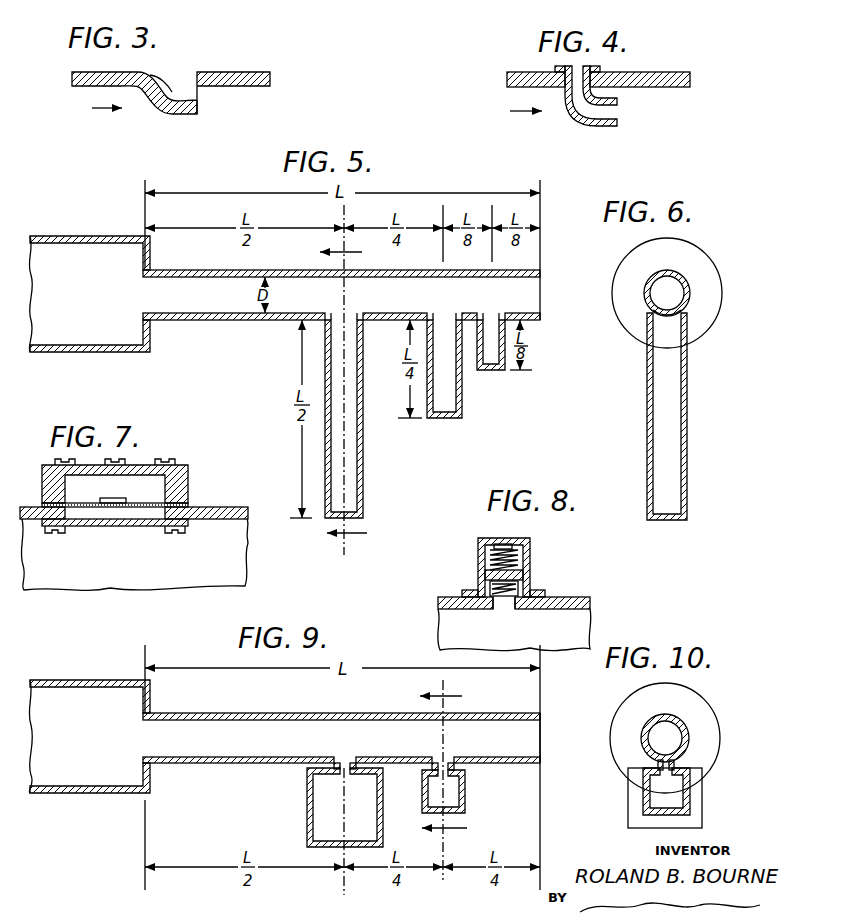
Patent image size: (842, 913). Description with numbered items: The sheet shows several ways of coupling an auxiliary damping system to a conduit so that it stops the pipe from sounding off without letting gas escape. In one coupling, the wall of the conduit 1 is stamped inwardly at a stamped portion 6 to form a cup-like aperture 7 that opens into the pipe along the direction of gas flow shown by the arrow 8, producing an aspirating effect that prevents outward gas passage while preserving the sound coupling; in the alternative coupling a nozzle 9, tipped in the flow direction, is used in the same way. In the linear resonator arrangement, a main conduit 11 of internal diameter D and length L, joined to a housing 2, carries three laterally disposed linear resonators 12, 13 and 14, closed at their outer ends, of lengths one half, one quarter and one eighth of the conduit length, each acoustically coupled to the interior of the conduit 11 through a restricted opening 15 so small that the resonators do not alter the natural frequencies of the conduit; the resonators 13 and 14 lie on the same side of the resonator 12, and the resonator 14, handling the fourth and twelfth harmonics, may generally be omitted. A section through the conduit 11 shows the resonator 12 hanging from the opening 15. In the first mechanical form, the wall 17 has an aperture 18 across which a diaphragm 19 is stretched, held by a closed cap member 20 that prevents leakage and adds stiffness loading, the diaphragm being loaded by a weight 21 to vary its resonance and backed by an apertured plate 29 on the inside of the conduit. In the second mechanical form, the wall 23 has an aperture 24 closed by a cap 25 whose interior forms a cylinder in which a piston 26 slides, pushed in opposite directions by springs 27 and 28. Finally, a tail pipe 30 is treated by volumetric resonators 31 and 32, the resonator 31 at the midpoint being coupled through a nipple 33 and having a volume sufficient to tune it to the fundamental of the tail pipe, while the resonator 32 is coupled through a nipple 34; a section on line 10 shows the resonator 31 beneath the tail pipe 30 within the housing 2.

In FIG. 3, the conduit 1 is at (80, 78).
In FIG. 4, the conduit 1 is at (657, 72).
In FIG. 5, the cylindrical housing 2 is at (68, 238).
In FIG. 6, the cylindrical housing 2 is at (714, 262).
In FIG. 9, the cylindrical housing 2 is at (84, 793).
In FIG. 10, the cylindrical housing 2 is at (717, 760).
In FIG. 3, the inwardly stamped wall portion 6 is at (178, 90).
In FIG. 5, the inwardly stamped wall portion 6 is at (351, 380).
In FIG. 3, the cup-like aperture 7 is at (200, 95).
In FIG. 3, the arrow indicating direction of gas flow 8 is at (95, 105).
In FIG. 4, the arrow indicating direction of gas flow 8 is at (518, 111).
In FIG. 4, the nozzle 9 is at (599, 127).
In FIG. 9, the section line 10 is at (457, 780).
In FIG. 5, the main conduit 11 is at (238, 318).
In FIG. 6, the main conduit 11 is at (648, 280).
In FIG. 5, the linear resonator 12 is at (363, 440).
In FIG. 6, the linear resonator 12 is at (687, 418).
In FIG. 5, the linear resonator 13 is at (462, 398).
In FIG. 5, the linear resonator 14 is at (500, 375).
In FIG. 5, the restricted opening 15 is at (349, 313).
In FIG. 6, the restricted opening 15 is at (668, 300).
In FIG. 7, the wall 17 is at (212, 519).
In FIG. 7, the aperture 18 is at (72, 533).
In FIG. 7, the diaphragm 19 is at (152, 526).
In FIG. 7, the cap member 20 is at (183, 490).
In FIG. 7, the weight 21 is at (106, 500).
In FIG. 8, the wall 23 is at (567, 598).
In FIG. 8, the aperture 24 is at (503, 609).
In FIG. 8, the cap 25 is at (478, 563).
In FIG. 8, the piston 26 is at (518, 578).
In FIG. 8, the spring 27 is at (488, 583).
In FIG. 8, the spring 28 is at (500, 542).
In FIG. 7, the apertured plate 29 is at (150, 520).
In FIG. 9, the tail pipe 30 is at (208, 713).
In FIG. 10, the tail pipe 30 is at (686, 720).
In FIG. 9, the volumetric resonator 31 is at (307, 805).
In FIG. 9, the volumetric resonator 32 is at (465, 794).
In FIG. 9, the nipple 33 is at (340, 758).
In FIG. 9, the nipple 34 is at (452, 758).